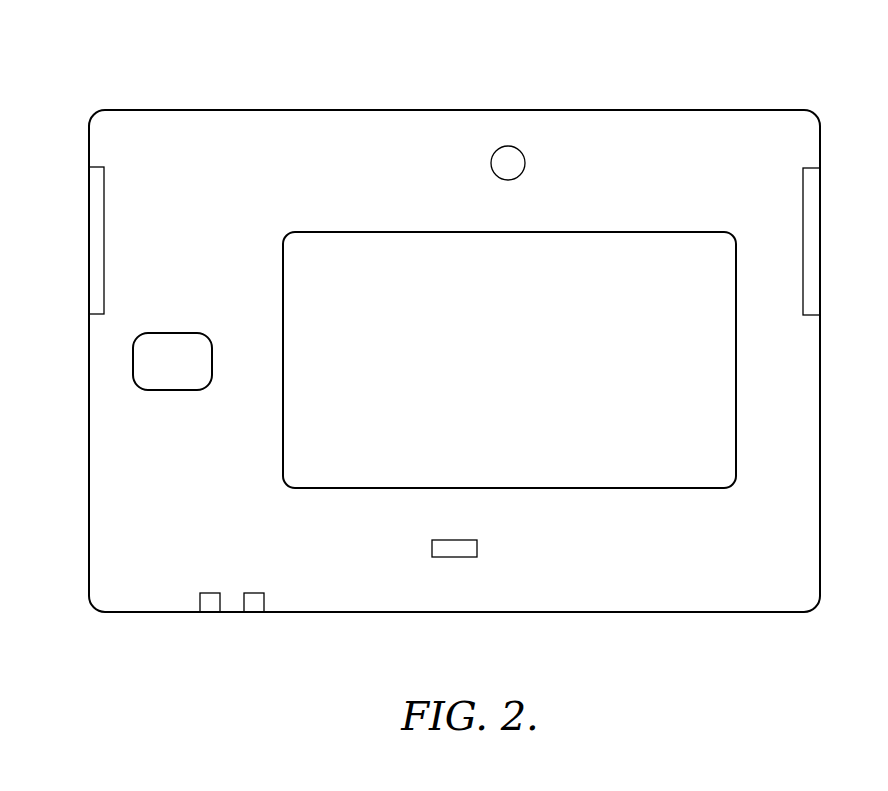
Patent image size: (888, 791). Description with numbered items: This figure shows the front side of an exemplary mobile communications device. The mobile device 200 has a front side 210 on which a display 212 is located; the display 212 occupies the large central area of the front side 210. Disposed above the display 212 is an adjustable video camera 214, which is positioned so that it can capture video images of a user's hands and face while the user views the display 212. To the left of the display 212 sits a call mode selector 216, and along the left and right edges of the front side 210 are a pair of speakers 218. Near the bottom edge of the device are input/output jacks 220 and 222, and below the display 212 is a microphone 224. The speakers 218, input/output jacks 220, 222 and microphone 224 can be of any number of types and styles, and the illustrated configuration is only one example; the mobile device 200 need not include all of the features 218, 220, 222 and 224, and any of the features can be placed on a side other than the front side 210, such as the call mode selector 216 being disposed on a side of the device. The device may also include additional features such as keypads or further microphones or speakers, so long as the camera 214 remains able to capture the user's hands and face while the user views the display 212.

The mobile device 200 is at (140, 50).
The front side 210 is at (627, 110).
The display 212 is at (573, 488).
The adjustable video camera 214 is at (525, 160).
The call mode selector 216 is at (170, 390).
The speakers 218 is at (91, 227).
The input/output jack 220 is at (210, 612).
The input/output jack 222 is at (254, 612).
The microphone 224 is at (454, 557).